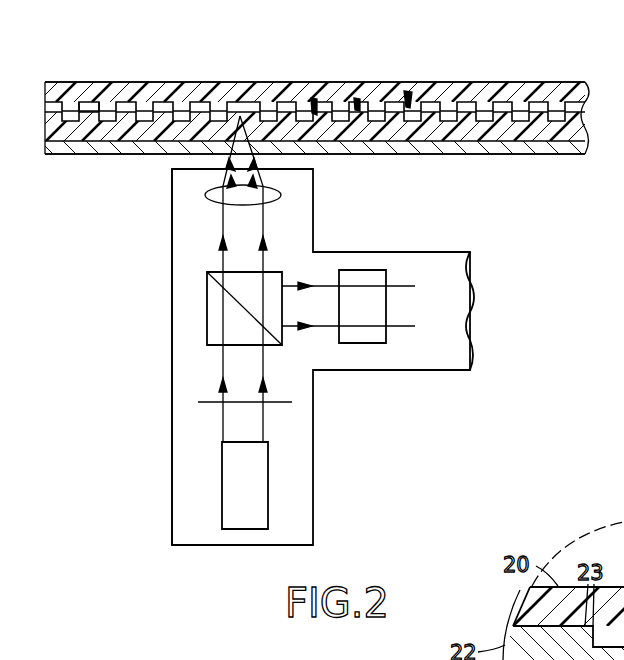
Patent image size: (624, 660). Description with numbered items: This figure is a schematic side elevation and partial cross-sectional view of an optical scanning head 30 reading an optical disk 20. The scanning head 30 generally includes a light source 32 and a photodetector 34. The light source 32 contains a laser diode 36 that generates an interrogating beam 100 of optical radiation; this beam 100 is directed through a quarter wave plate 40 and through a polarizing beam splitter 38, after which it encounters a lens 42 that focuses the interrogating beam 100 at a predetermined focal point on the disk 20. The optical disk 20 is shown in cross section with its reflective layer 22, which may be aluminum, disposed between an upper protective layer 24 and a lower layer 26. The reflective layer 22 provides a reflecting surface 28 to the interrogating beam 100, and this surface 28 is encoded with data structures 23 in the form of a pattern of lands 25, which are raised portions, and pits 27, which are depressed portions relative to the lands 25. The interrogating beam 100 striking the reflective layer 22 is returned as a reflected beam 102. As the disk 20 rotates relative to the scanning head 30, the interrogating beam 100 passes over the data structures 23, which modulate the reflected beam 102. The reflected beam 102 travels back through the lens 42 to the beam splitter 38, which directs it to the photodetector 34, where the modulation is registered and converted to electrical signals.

The optical disk 20 is at (548, 82).
The reflective layer 22 is at (391, 100).
The data structures 23 is at (407, 98).
The upper protective layer 24 is at (484, 82).
The lands 25 is at (357, 92).
The lower layer 26 is at (473, 124).
The pits 27 is at (90, 100).
The reflecting surface 28 is at (568, 136).
The scanning head 30 is at (172, 492).
The light source 32 is at (172, 418).
The photodetector 34 is at (424, 252).
The laser diode 36 is at (268, 500).
The polarizing beam splitter 38 is at (205, 307).
The quarter wave plate 40 is at (292, 402).
The lens 42 is at (210, 198).
The interrogating beam 100 is at (223, 365).
The reflected beam 102 is at (315, 330).